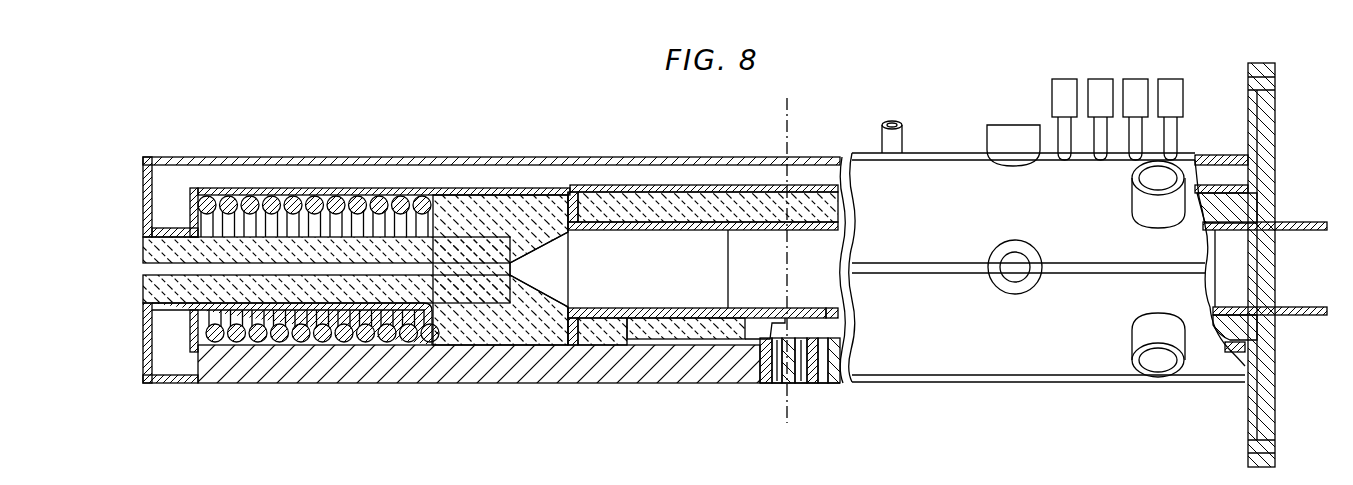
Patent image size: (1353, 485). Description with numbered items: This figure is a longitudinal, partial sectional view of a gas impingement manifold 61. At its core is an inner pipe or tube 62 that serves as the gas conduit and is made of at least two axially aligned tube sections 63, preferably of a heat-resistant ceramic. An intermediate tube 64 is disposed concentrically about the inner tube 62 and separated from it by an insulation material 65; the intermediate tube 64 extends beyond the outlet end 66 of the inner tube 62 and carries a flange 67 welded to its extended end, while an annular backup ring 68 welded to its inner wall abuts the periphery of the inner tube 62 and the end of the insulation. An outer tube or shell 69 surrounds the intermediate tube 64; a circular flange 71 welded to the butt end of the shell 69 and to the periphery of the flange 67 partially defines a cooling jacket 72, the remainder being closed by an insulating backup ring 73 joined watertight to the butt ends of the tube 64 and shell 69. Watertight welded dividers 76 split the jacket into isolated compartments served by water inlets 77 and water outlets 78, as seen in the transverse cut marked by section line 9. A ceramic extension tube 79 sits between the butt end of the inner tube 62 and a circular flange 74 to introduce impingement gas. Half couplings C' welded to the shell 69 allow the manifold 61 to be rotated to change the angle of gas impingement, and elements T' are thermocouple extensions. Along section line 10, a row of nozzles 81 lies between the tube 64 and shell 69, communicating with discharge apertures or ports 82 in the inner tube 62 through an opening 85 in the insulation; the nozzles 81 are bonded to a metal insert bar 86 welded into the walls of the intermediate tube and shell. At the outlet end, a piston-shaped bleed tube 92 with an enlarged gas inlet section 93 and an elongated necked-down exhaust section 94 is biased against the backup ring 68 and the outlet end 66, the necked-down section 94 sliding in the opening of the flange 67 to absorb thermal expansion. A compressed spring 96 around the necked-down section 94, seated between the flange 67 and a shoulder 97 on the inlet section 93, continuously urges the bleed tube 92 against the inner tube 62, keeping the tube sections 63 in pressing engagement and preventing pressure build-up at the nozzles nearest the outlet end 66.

The section line 9- 9 is at (1128, 51).
The section line 10- 10 is at (762, 113).
The gas impingement manifold 61 is at (467, 236).
The inner pipe or tube 62 is at (689, 307).
The tube sections 63 is at (711, 228).
The intermediate tube 64 is at (713, 185).
The insulation material 65 is at (763, 203).
The outlet end 66 is at (584, 232).
The flange 67 is at (191, 205).
The annular backup ring 68 is at (567, 208).
The outer tube or shell 69 is at (638, 158).
The circular flange 71 is at (142, 205).
The cooling jacket 72 is at (377, 176).
The insulating backup ring 73 is at (1258, 174).
The circular flange 74 is at (1268, 118).
The watertight welded dividers 76 is at (925, 263).
The water inlets 77 is at (1135, 339).
The water outlets 78 is at (1137, 200).
The ceramic extension tube 79 is at (1303, 228).
The nozzles 81 is at (800, 380).
The discharge apertures or ports 82 is at (821, 312).
The opening 85 is at (758, 323).
The metal insert bar 86 is at (627, 384).
The bleed tube 92 is at (458, 212).
The enlarged gas inlet section 93 is at (498, 212).
The elongated necked-down exhaust section 94 is at (150, 289).
The compressed spring 96 is at (270, 213).
The shoulder 97 is at (413, 338).
The half couplings C' is at (962, 195).
The thermocouple extensions T' is at (1117, 263).